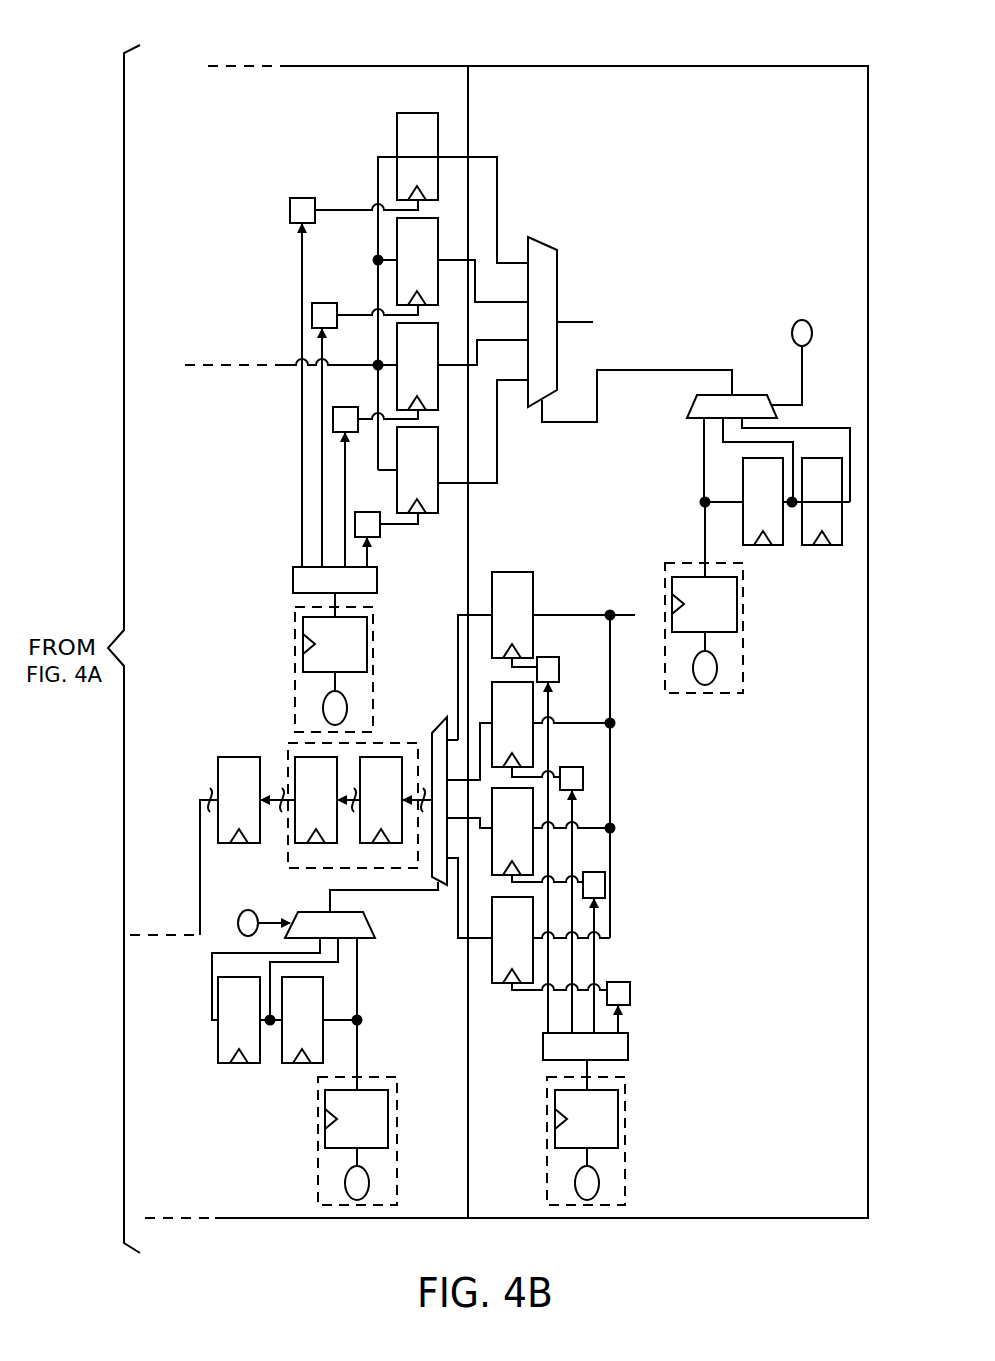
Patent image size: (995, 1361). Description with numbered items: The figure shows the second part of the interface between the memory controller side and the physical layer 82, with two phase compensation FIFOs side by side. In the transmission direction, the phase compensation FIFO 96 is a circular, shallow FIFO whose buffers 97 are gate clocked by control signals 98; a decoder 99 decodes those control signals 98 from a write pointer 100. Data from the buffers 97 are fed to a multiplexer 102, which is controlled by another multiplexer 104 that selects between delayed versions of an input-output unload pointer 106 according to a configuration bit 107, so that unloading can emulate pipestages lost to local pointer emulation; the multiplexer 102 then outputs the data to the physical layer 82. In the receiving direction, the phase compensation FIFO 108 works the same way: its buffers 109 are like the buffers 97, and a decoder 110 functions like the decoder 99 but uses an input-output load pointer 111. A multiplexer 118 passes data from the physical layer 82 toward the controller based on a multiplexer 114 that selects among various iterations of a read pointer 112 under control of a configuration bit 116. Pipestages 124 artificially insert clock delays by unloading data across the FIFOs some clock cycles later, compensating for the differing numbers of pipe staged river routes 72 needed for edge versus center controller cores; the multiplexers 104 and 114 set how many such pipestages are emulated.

The pipe staged river routes 72 is at (256, 1104).
The physical layer 82 is at (689, 52).
The phase compensation FIFO 96 is at (300, 130).
The buffers 97 is at (410, 113).
The control signals 98 is at (372, 562).
The decoder 99 is at (377, 580).
The write pointer 100 is at (335, 605).
The multiplexer 102 is at (545, 245).
The multiplexer 104 is at (692, 412).
The input-output unload pointer 106 is at (705, 545).
The configuration bit 107 is at (796, 325).
The phase compensation FIFO 108 is at (601, 585).
The buffers 109 is at (512, 572).
The decoder 110 is at (628, 1047).
The input-output load pointer 111 is at (587, 1068).
The read pointer 112 is at (357, 1058).
The multiplexer 114 is at (372, 922).
The configuration bit 116 is at (263, 910).
The multiplexer 118 is at (440, 730).
The pipestages 124 is at (288, 760).